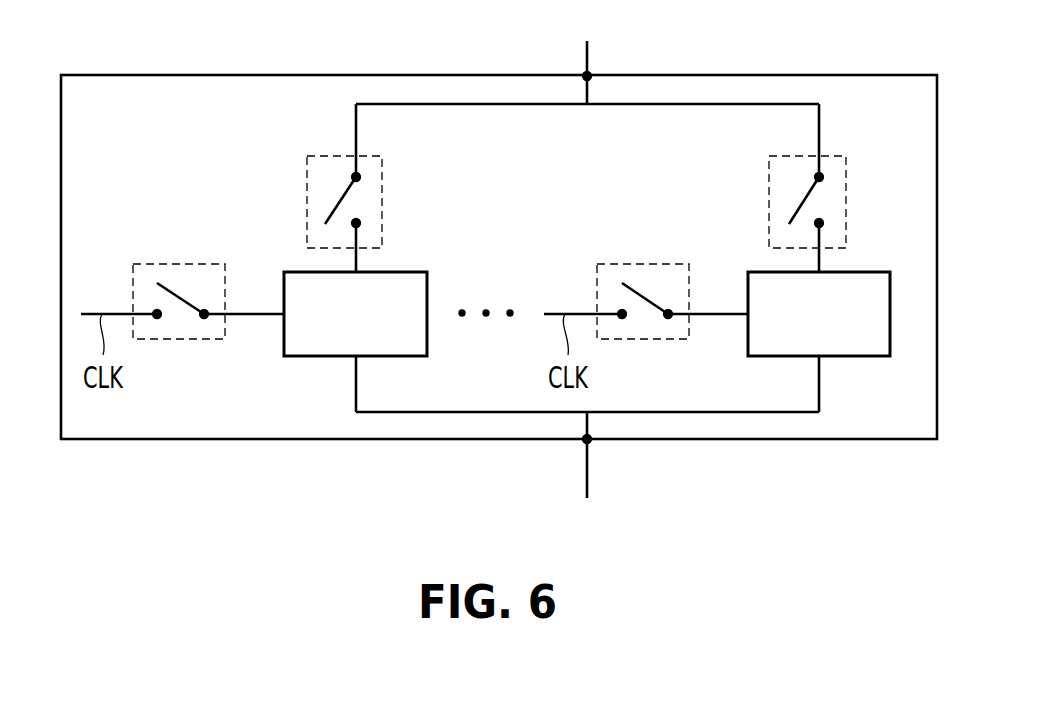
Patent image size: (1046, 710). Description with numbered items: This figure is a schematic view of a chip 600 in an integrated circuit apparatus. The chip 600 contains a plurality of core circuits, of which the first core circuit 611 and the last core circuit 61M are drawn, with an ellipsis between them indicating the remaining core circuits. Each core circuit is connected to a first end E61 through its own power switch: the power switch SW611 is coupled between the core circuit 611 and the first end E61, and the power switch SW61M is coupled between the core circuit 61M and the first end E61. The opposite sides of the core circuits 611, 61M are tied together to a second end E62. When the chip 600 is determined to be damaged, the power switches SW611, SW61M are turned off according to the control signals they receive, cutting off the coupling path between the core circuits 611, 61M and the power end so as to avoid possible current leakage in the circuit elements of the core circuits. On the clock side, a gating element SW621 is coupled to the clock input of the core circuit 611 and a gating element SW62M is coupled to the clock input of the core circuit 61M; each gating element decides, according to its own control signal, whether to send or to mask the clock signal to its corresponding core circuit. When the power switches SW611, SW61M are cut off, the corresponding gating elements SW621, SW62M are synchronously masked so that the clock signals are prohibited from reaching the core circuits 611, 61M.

The chip 600 is at (819, 75).
The core circuit 611 is at (393, 272).
The core circuit 61M is at (857, 272).
The power switch SW611 is at (322, 156).
The power switch SW61M is at (793, 156).
The gating element SW621 is at (168, 264).
The gating element SW62M is at (635, 264).
The first end E61 is at (590, 74).
The second end E62 is at (590, 441).